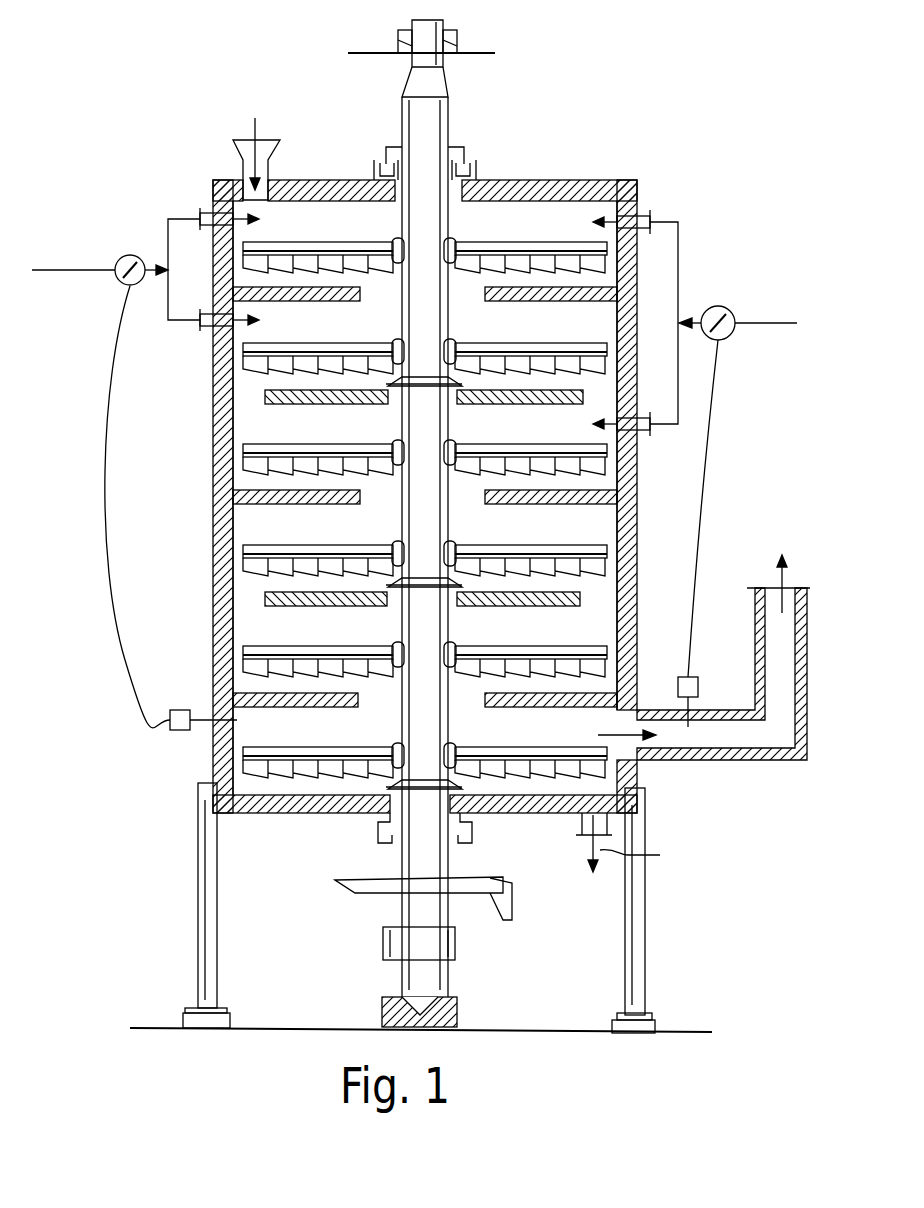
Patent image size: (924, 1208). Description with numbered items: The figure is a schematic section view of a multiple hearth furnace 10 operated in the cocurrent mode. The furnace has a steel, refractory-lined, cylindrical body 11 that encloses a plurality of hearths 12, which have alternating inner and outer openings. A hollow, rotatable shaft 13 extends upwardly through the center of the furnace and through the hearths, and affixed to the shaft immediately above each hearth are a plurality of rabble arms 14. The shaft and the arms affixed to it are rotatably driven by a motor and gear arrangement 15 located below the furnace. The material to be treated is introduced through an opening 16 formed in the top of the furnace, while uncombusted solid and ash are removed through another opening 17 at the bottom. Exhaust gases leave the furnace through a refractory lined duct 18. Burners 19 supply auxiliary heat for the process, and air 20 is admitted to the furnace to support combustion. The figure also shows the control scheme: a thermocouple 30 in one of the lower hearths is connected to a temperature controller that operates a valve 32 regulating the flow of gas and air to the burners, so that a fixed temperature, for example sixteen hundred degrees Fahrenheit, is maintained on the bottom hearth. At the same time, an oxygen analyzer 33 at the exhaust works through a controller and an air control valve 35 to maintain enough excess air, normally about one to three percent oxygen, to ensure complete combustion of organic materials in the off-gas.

The multiple hearth furnace 10 is at (213, 405).
The cylindrical body 11 is at (223, 445).
The hearths 12 is at (310, 502).
The hollow rotatable shaft 13 is at (448, 426).
The rabble arms 14 is at (540, 546).
The motor and gear arrangement 15 is at (345, 884).
The opening 16 is at (274, 165).
The opening 17 is at (578, 828).
The refractory lined duct 18 is at (808, 650).
The burners 19 is at (202, 210).
The air 20 is at (647, 207).
The thermocouple 30 is at (172, 733).
The valve 32 is at (120, 284).
The oxygen analyzer 33 is at (708, 685).
The air control valve 35 is at (730, 338).